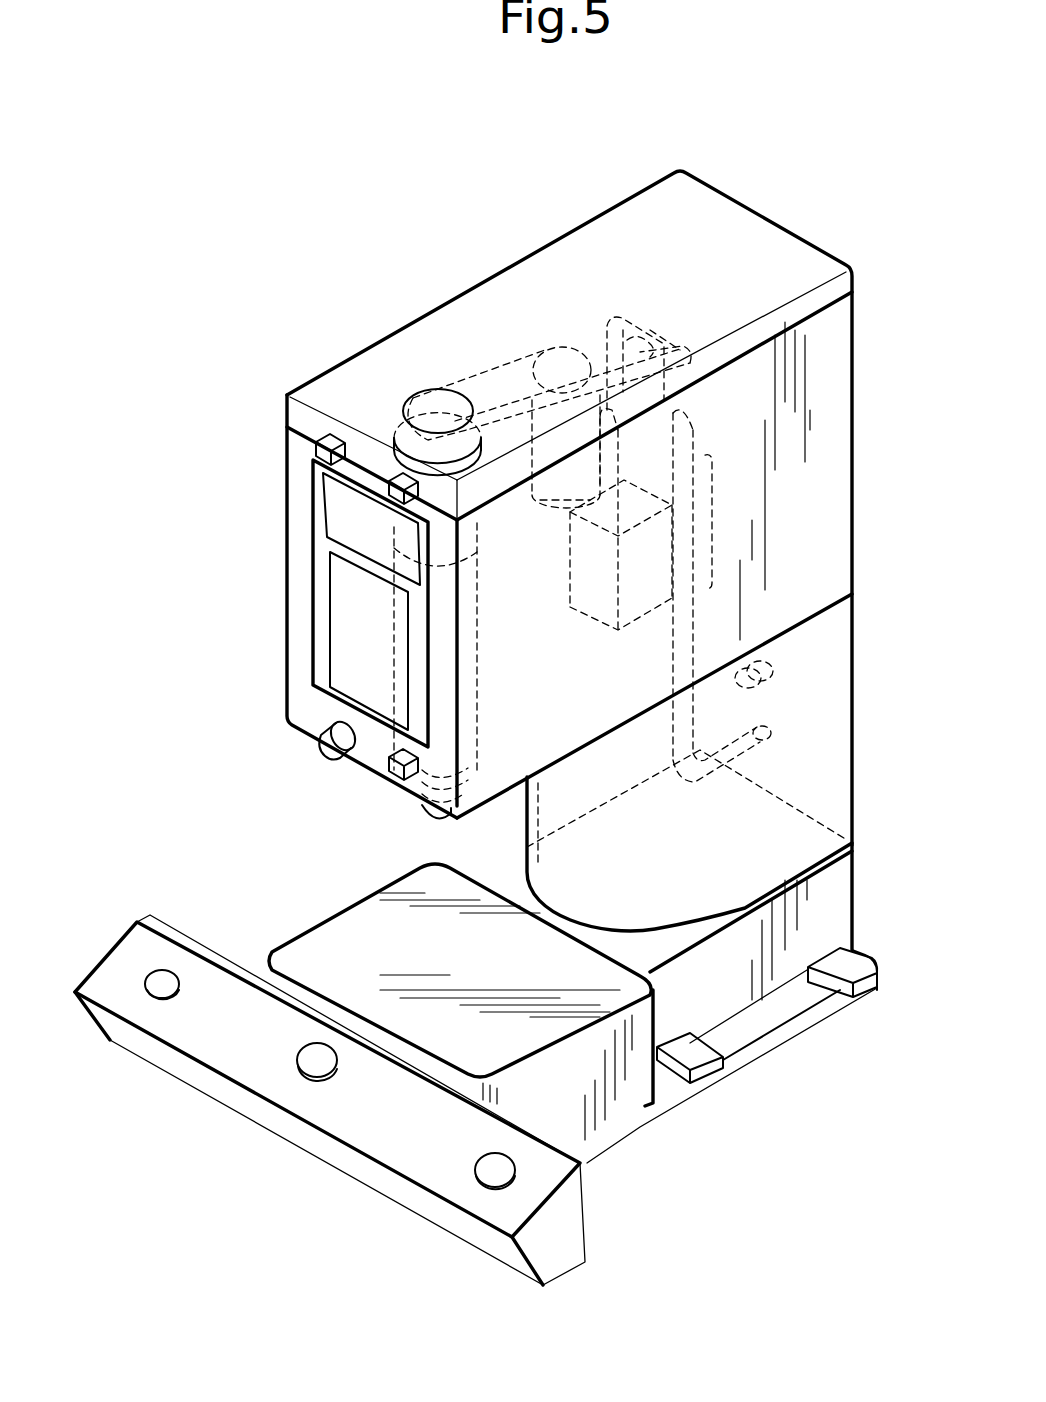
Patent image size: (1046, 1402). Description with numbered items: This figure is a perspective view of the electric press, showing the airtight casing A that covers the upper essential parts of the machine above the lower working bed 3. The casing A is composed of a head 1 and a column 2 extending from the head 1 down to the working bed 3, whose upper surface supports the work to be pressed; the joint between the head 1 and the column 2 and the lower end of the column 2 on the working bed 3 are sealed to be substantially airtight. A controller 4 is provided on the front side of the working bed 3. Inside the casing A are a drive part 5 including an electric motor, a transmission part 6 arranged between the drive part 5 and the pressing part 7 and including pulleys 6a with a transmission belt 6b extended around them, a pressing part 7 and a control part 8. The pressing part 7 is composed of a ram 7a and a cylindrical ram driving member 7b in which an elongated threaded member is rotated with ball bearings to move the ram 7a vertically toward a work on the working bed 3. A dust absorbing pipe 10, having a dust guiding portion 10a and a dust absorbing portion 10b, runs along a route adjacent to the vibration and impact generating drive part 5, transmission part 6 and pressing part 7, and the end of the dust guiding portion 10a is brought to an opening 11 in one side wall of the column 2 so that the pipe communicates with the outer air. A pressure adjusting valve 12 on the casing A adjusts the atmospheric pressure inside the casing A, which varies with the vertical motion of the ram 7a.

The airtight casing A is at (769, 204).
The head 1 is at (567, 233).
The column 2 is at (852, 733).
The working bed 3 is at (348, 907).
The controller 4 is at (416, 1200).
The drive part 5 is at (551, 512).
The transmission part 6 is at (505, 352).
The pulleys 6a is at (407, 396).
The transmission belt 6b is at (475, 372).
The pressing part 7 is at (486, 657).
The ram 7a is at (422, 817).
The ram driving member 7b is at (482, 607).
The control part 8 is at (643, 628).
The dust absorbing pipe 10 is at (702, 632).
The dust guiding portion 10a is at (653, 322).
The dust absorbing portion 10b is at (720, 511).
The opening 11 is at (775, 735).
The pressure adjusting valve 12 is at (770, 672).